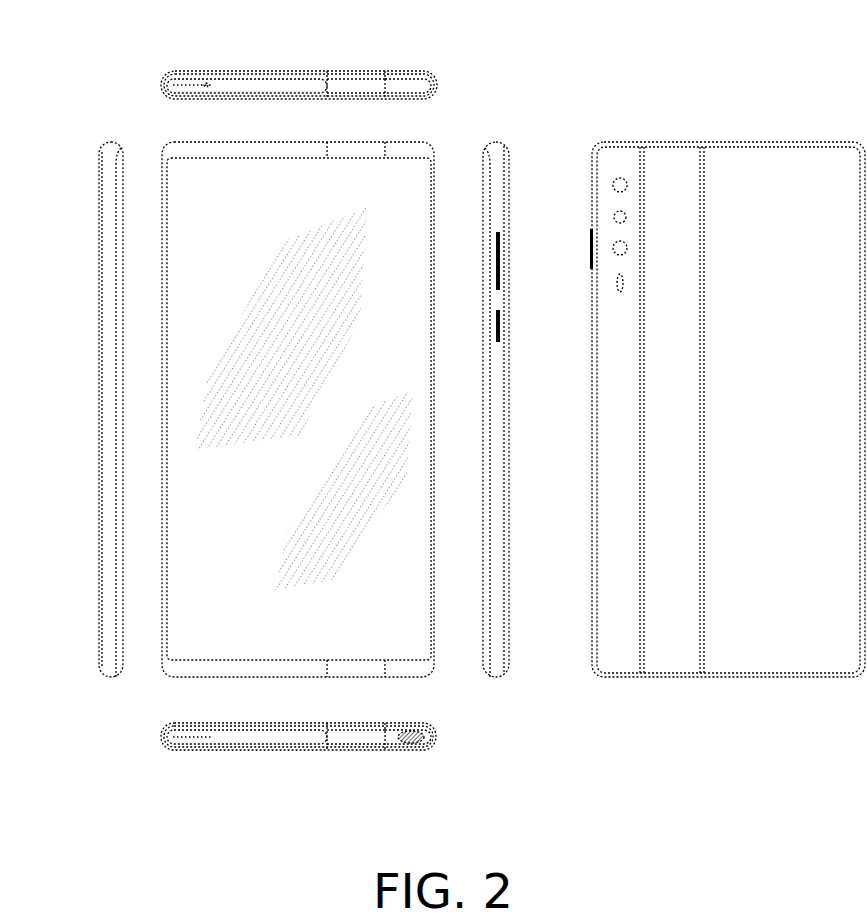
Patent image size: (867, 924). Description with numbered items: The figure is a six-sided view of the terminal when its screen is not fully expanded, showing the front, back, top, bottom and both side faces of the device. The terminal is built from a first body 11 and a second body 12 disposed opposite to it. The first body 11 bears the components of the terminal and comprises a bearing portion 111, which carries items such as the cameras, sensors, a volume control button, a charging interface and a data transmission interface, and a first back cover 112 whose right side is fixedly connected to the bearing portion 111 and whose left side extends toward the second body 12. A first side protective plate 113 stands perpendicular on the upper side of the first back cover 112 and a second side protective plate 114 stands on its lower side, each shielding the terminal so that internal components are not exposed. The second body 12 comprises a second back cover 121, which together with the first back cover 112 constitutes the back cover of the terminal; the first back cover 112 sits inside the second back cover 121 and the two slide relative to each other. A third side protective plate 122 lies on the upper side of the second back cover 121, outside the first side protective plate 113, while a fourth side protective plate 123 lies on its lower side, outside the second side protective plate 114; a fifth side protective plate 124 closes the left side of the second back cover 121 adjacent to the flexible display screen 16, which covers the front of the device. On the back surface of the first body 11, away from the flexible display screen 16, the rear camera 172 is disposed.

The first body 11 is at (513, 415).
The second body 12 is at (300, 359).
The flexible display screen 16 is at (304, 398).
The bearing portion 111 is at (406, 85).
The first back cover 112 is at (644, 410).
The first side protective plate 113 is at (350, 85).
The second side protective plate 114 is at (348, 737).
The second back cover 121 is at (780, 410).
The third side protective plate 122 is at (262, 85).
The fourth side protective plate 123 is at (250, 737).
The fifth side protective plate 124 is at (99, 400).
The rear camera 172 is at (612, 185).